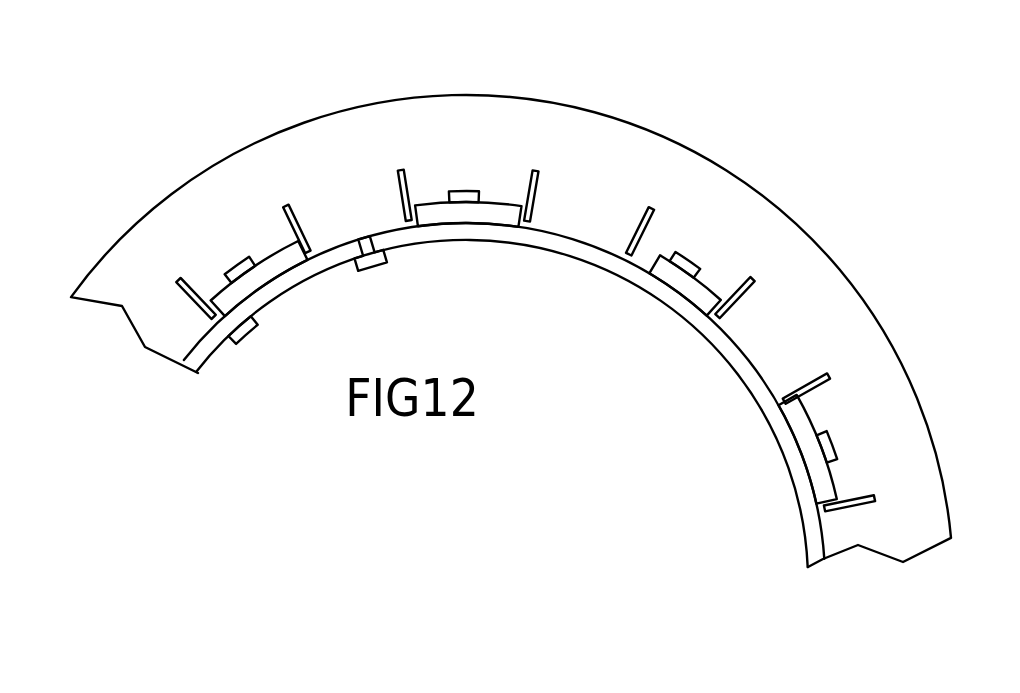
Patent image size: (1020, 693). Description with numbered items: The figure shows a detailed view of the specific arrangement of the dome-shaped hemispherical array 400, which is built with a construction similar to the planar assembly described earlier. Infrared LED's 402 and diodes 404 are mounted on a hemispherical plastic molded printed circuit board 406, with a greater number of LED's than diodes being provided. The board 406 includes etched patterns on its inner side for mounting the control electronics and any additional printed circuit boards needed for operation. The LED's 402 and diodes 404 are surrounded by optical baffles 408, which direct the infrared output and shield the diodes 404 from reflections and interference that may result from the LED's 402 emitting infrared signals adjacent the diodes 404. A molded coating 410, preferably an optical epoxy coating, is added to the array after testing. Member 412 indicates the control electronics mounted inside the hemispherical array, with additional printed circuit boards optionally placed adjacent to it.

The hemispherical array 400 is at (659, 75).
The infrared LED 402 is at (442, 200).
The diode 404 is at (742, 238).
The hemispherical plastic molded printed circuit board 406 is at (808, 560).
The optical baffle 408 is at (798, 276).
The molded coating 410 is at (882, 557).
The control electronics 412 is at (360, 267).